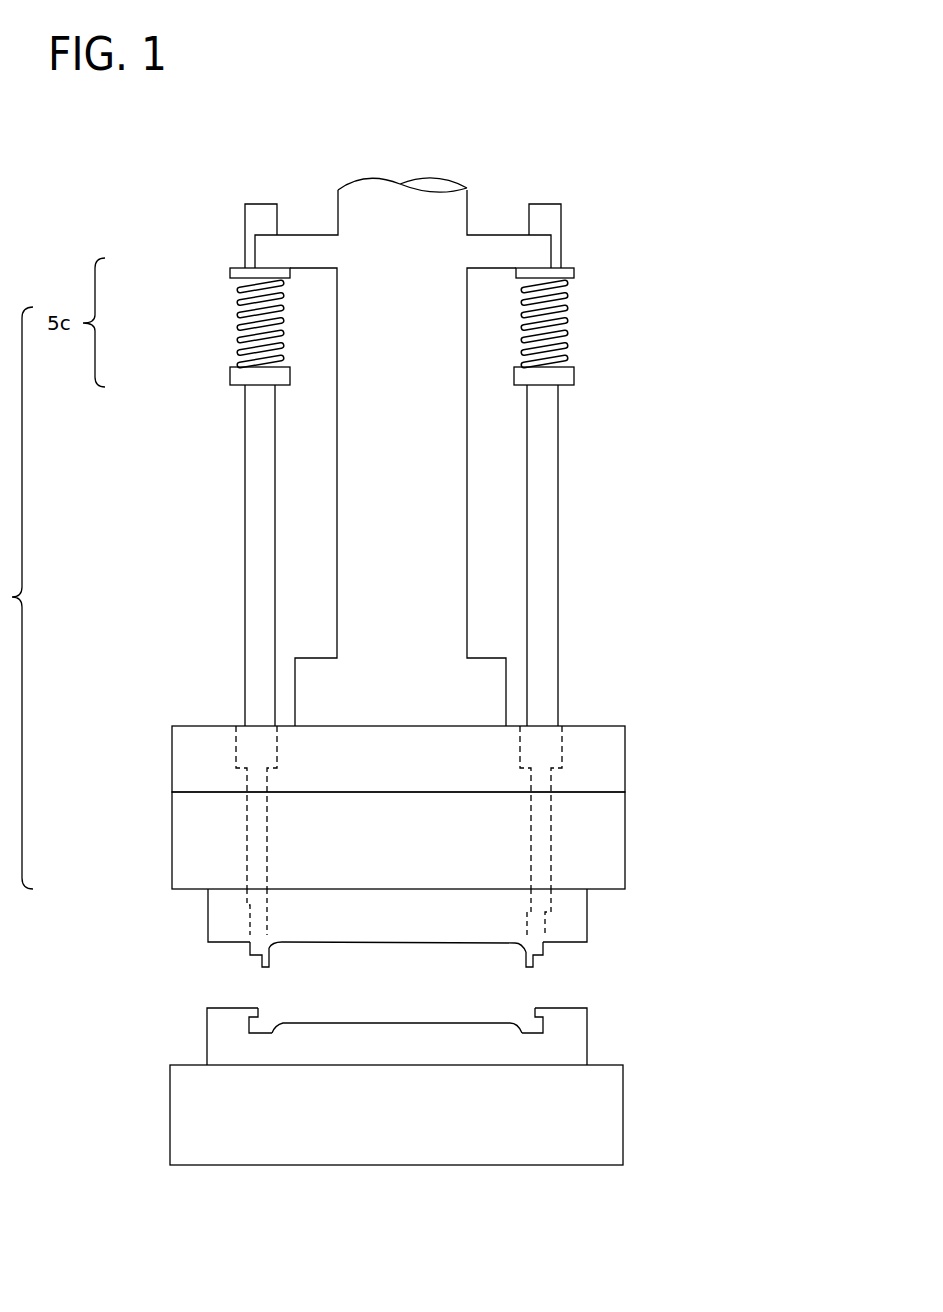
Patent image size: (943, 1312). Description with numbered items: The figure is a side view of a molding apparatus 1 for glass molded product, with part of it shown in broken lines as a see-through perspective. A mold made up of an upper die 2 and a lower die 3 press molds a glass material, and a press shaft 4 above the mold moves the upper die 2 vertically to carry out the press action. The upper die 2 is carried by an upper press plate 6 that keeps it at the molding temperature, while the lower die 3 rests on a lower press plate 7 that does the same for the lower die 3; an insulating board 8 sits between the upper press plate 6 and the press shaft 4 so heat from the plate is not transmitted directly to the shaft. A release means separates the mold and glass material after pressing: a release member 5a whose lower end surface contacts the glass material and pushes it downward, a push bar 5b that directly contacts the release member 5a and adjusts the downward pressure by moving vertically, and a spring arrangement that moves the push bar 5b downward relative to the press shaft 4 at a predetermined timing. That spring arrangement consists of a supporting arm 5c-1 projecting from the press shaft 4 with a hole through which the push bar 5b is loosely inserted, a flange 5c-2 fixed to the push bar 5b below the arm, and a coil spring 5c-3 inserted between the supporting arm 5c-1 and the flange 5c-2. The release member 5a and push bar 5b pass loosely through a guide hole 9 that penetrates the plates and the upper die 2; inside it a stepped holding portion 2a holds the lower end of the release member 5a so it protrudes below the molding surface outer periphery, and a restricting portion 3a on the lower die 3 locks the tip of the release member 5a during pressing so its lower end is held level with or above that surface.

The molding apparatus for glass molded product 1 is at (680, 146).
The upper die 2 is at (420, 928).
The holding portion 2a is at (248, 947).
The lower die 3 is at (418, 1028).
The restricting portion 3a is at (252, 1008).
The press shaft 4 is at (467, 205).
The release member 5a is at (240, 920).
The push bar 5b is at (242, 530).
The supporting arm 5c-1 is at (230, 272).
The flange 5c-2 is at (229, 378).
The coil spring 5c-3 is at (235, 322).
The upper press plate 6 is at (625, 848).
The lower press plate 7 is at (623, 1115).
The insulating board 8 is at (625, 759).
The guide hole 9 is at (563, 757).